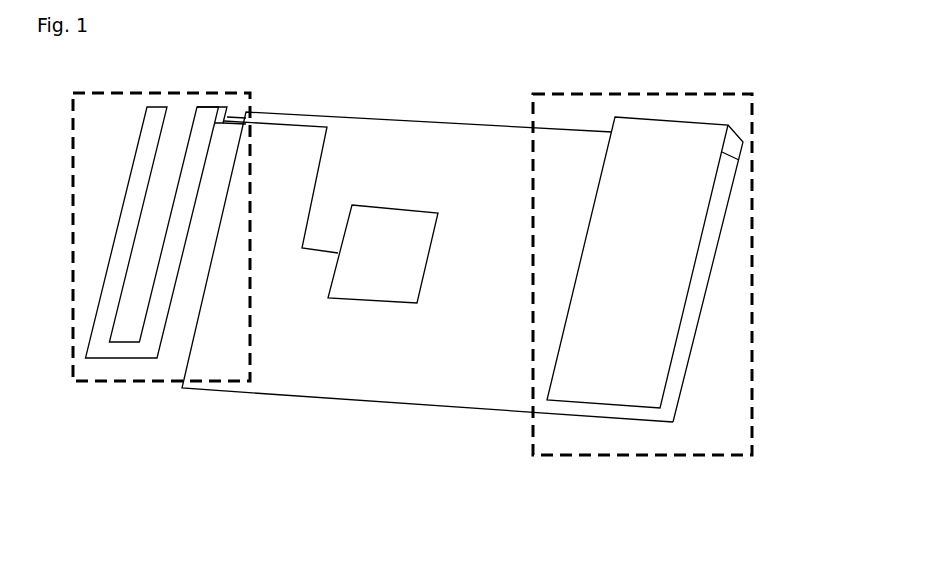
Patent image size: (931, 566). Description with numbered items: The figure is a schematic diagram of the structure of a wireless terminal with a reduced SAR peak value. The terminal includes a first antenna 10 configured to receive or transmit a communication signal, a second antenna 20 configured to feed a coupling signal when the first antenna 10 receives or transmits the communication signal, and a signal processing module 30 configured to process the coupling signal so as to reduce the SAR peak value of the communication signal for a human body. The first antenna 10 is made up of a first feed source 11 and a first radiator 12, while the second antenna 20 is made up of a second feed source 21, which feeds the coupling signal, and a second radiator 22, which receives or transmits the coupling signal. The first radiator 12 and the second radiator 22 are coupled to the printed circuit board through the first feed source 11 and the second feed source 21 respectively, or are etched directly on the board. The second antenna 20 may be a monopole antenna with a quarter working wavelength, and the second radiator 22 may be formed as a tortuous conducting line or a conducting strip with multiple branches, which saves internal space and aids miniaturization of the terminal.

The first antenna 10 is at (718, 332).
The first feed source 11 is at (733, 143).
The first radiator 12 is at (673, 155).
The second antenna 20 is at (170, 353).
The second feed source 21 is at (230, 122).
The second radiator 22 is at (148, 137).
The signal processing module 30 is at (388, 238).